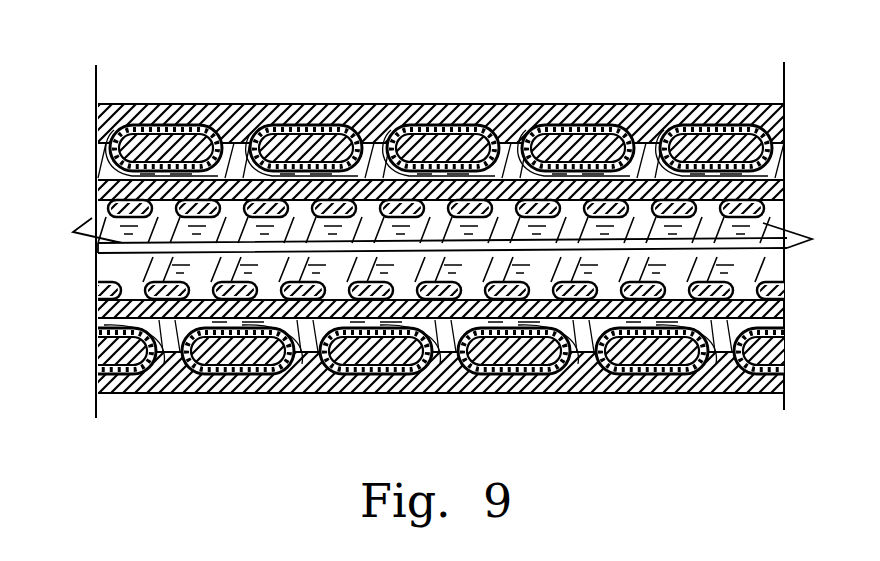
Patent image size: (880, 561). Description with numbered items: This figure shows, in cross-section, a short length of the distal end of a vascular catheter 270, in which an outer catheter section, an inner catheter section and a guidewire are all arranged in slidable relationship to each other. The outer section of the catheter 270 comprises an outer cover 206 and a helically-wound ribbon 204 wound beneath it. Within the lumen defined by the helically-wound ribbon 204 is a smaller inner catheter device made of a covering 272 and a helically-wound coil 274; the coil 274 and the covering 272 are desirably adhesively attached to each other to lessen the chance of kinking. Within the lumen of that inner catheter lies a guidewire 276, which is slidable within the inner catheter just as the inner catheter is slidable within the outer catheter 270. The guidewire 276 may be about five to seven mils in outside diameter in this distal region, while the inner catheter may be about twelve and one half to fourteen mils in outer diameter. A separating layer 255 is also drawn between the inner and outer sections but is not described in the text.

The vascular catheter 270 is at (537, 86).
The separator plate 255 is at (88, 206).
The helically-wound coil 274 is at (175, 280).
The guidewire 276 is at (740, 256).
The catheter device covering 272 is at (102, 303).
The outer cover 206 is at (160, 396).
The helically-wound ribbon 204 is at (272, 396).